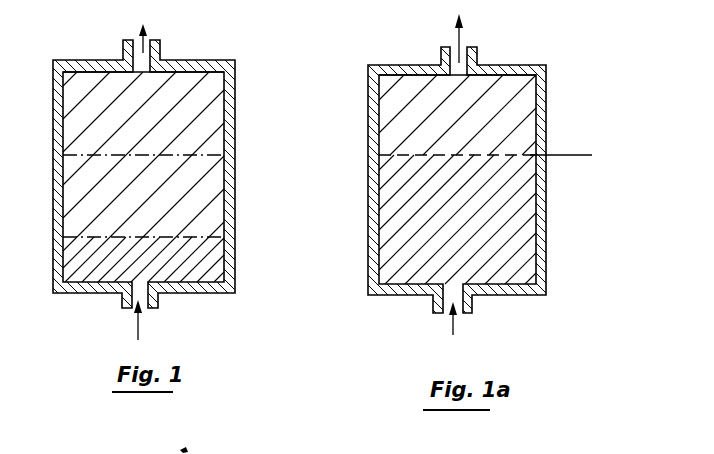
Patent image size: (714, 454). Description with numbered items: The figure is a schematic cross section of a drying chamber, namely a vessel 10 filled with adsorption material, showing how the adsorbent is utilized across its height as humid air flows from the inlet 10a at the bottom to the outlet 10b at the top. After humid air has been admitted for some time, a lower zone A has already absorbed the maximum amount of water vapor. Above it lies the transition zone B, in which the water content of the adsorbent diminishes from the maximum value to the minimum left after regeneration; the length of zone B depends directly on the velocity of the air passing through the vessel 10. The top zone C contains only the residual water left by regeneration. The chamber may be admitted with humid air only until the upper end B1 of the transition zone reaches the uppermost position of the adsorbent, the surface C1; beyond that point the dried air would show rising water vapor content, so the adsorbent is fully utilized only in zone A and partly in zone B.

In FIG. 1, the vessel 10 is at (210, 238).
In FIG. 1A, the vessel 10 is at (538, 262).
In FIG. 1, the inlet 10a is at (157, 308).
In FIG. 1, the outlet 10b is at (161, 46).
In FIG. 1, the zone A is at (212, 262).
In FIG. 1A, the zone A is at (514, 218).
In FIG. 1, the transition zone B is at (212, 197).
In FIG. 1A, the transition zone B is at (525, 117).
In FIG. 1, the upper end of the transition zone B1 is at (224, 155).
In FIG. 1A, the upper end of the transition zone B1 is at (525, 77).
In FIG. 1, the top zone C is at (212, 113).
In FIG. 1, the surface C1 is at (213, 73).